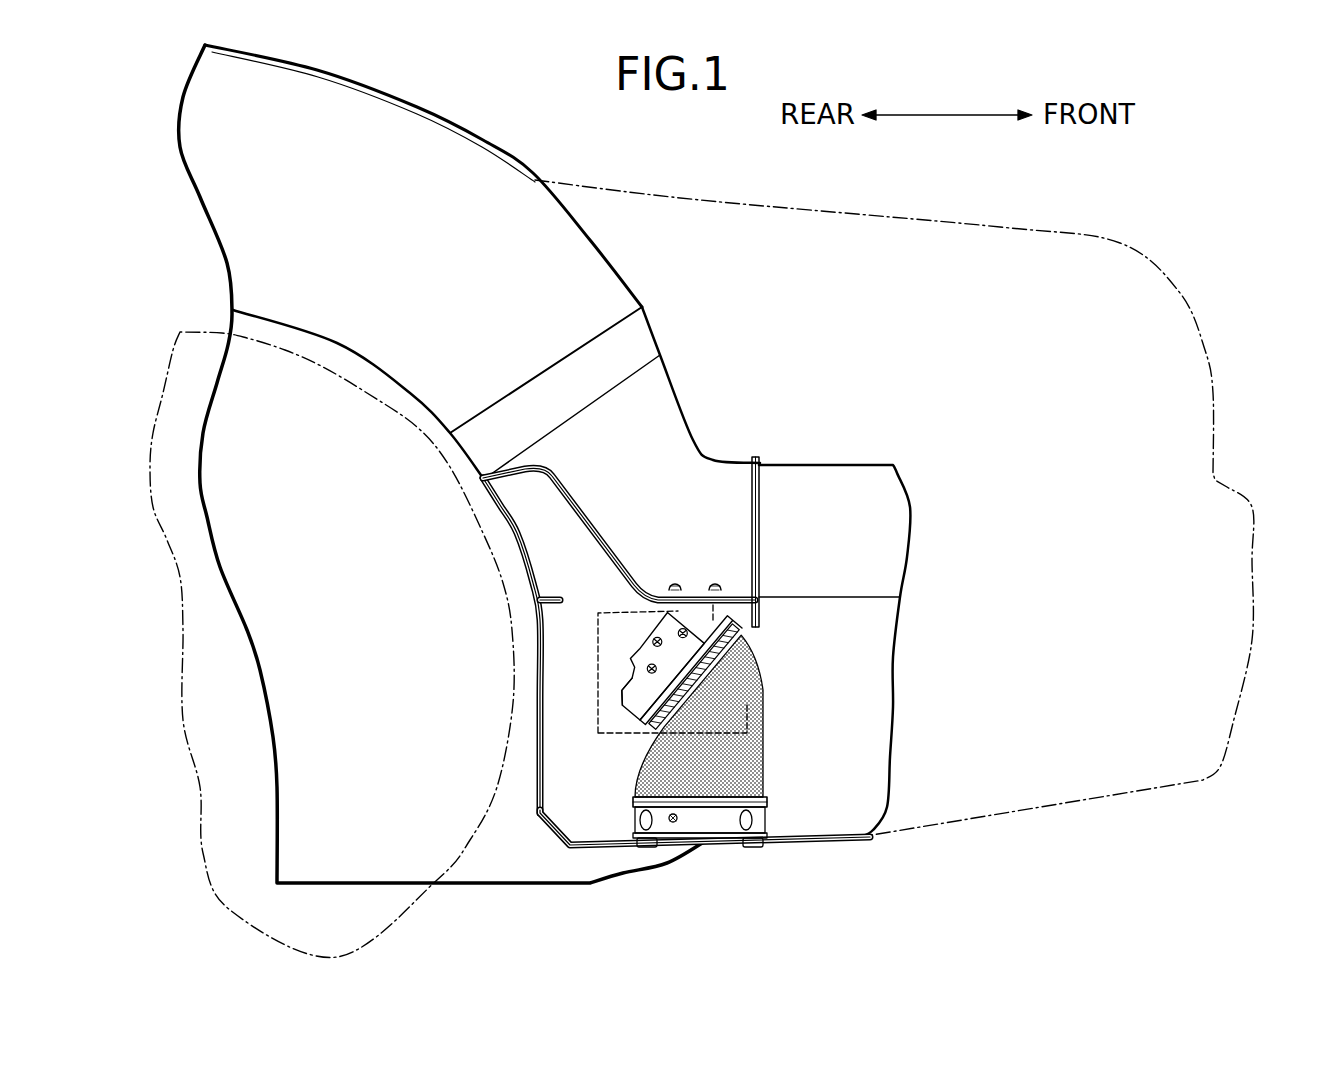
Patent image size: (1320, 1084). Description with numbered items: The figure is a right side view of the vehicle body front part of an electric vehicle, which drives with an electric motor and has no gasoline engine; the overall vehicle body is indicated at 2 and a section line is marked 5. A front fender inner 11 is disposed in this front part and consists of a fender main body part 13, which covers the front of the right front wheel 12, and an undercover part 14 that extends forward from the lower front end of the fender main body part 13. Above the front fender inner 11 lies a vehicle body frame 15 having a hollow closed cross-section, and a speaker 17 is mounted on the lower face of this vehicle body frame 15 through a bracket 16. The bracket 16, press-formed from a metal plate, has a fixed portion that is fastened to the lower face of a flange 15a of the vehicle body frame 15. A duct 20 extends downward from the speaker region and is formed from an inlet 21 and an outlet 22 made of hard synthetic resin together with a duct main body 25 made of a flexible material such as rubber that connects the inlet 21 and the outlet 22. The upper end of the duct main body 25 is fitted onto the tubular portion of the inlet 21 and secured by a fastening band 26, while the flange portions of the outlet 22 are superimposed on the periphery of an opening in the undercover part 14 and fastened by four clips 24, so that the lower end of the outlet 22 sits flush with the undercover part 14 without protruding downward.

The vehicle body 2 is at (943, 422).
The section line 5 is at (675, 590).
The front fender inner 11 is at (607, 915).
The right front wheel 12 is at (332, 370).
The fender main body part 13 is at (540, 783).
The undercover part 14 is at (607, 846).
The vehicle body frame 15 is at (688, 407).
The flange 15a is at (738, 594).
The bracket 16 is at (632, 652).
The speaker 17 is at (640, 672).
The duct 20 is at (836, 657).
The inlet 21 is at (735, 620).
The outlet 22 is at (765, 833).
The clips 24 is at (750, 848).
The duct main body 25 is at (743, 713).
The fastening band 26 is at (668, 722).